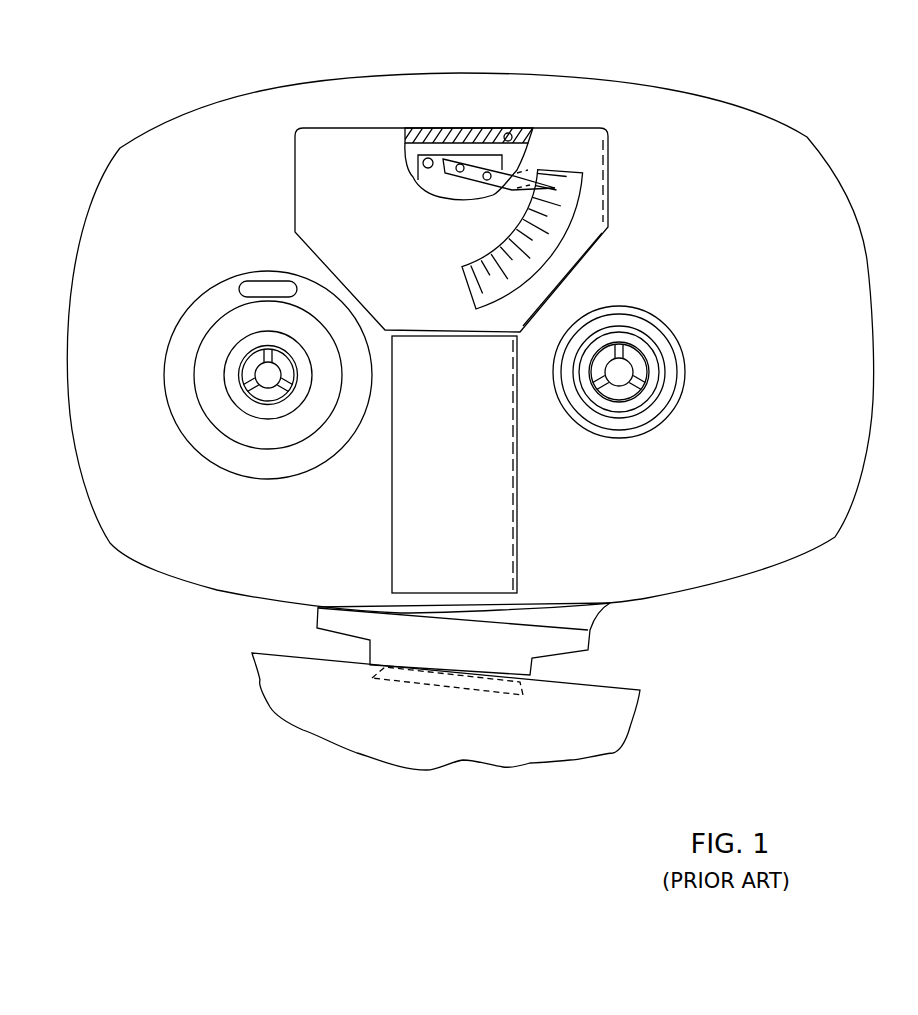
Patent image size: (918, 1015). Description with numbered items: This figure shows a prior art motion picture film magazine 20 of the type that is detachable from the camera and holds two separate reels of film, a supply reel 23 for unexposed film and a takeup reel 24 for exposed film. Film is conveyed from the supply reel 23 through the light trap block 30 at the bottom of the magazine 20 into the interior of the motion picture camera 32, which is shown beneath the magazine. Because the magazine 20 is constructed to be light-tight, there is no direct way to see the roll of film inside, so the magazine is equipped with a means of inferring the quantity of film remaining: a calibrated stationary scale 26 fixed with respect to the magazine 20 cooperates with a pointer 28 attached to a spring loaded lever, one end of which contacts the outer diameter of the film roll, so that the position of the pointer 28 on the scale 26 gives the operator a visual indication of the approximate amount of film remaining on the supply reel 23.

The film magazine 20 is at (118, 153).
The supply reel 23 is at (665, 308).
The takeup reel 24 is at (200, 287).
The calibrated stationary scale 26 is at (573, 202).
The pointer 28 is at (515, 172).
The light trap block 30 is at (362, 623).
The motion picture camera 32 is at (272, 685).